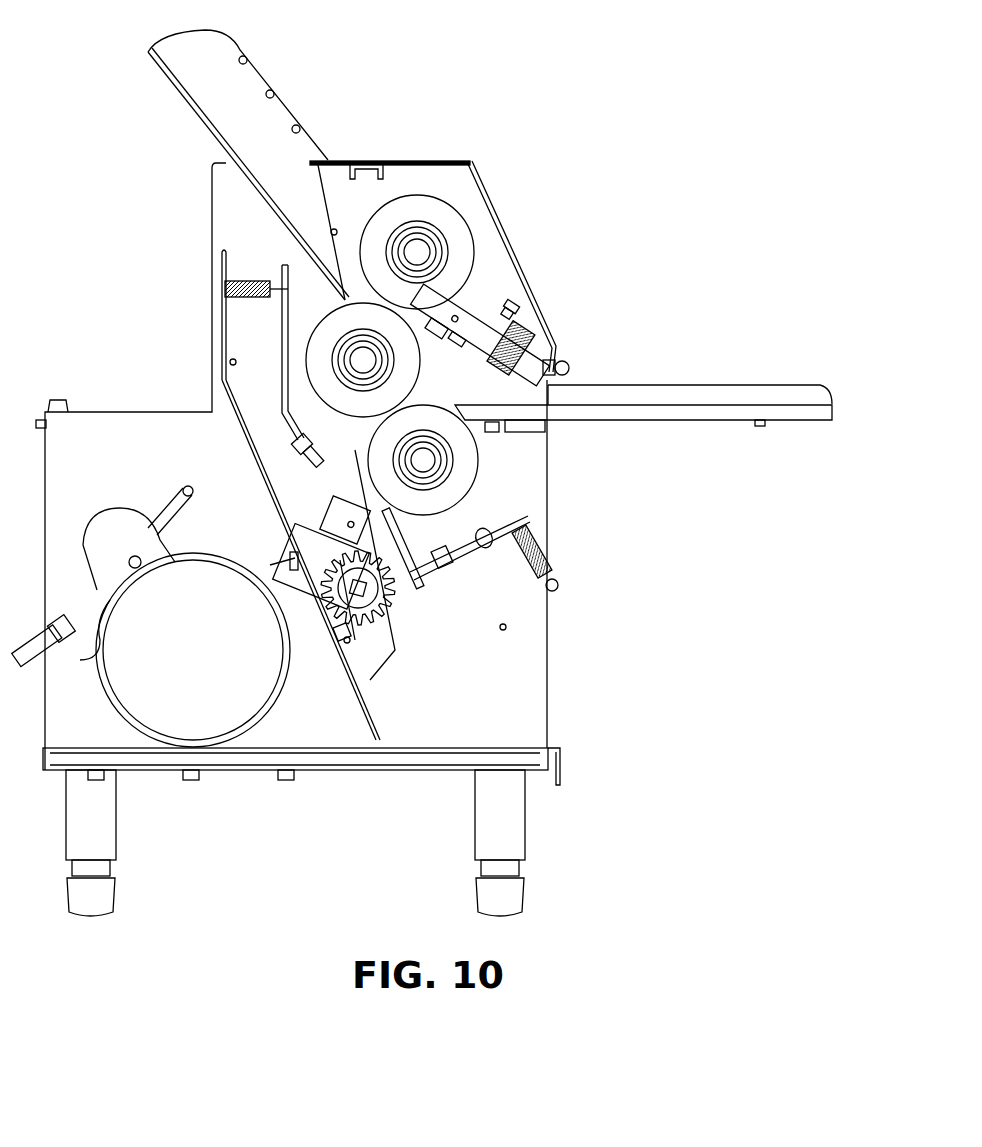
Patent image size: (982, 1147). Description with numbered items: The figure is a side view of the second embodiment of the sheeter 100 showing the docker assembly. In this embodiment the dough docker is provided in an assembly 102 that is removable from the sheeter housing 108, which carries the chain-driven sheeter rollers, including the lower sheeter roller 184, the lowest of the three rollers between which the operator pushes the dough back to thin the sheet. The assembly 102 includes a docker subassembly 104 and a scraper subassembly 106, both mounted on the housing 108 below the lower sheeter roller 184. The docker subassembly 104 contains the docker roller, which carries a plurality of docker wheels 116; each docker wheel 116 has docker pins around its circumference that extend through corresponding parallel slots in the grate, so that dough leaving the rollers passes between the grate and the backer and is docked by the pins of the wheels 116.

The sheeter 100 is at (538, 206).
The assembly 102 is at (412, 627).
The docker subassembly 104 is at (320, 518).
The scraper subassembly 106 is at (428, 594).
The sheeter housing 108 is at (147, 412).
The docker wheels 116 is at (352, 604).
The lower sheeter roller 184 is at (473, 488).